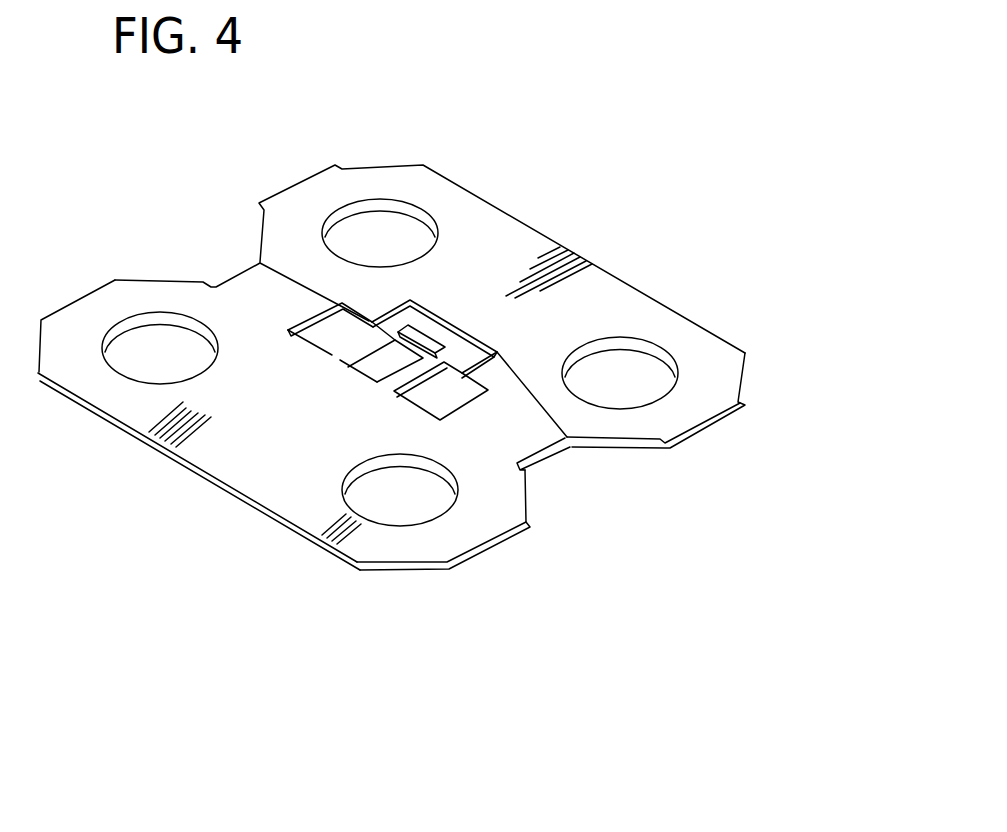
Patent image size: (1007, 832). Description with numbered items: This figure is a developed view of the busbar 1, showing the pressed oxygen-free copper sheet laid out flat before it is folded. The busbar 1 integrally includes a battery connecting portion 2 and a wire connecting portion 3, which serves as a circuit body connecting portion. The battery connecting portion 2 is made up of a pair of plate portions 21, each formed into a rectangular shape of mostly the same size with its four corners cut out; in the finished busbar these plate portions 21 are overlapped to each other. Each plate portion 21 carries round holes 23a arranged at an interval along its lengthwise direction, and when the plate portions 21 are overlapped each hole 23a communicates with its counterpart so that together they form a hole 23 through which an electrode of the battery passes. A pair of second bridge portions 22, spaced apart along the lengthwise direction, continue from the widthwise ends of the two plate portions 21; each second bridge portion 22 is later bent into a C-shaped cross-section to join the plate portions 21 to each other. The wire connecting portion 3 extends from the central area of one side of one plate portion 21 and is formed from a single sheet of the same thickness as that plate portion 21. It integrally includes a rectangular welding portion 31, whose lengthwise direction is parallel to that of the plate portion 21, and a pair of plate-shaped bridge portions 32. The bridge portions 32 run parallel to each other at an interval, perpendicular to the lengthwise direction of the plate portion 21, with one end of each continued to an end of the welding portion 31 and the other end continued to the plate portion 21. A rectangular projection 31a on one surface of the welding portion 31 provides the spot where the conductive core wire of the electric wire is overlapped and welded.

The busbar 1 is at (560, 186).
The battery connecting portion 2 is at (190, 703).
The wire connecting portion 3 is at (431, 330).
The plate portion 21 is at (305, 195).
The second bridge portion 22 is at (277, 305).
The hole 23 is at (390, 352).
The hole 23a is at (364, 204).
The welding portion 31 is at (460, 377).
The projection 31a is at (436, 344).
The bridge portion 32 is at (397, 375).